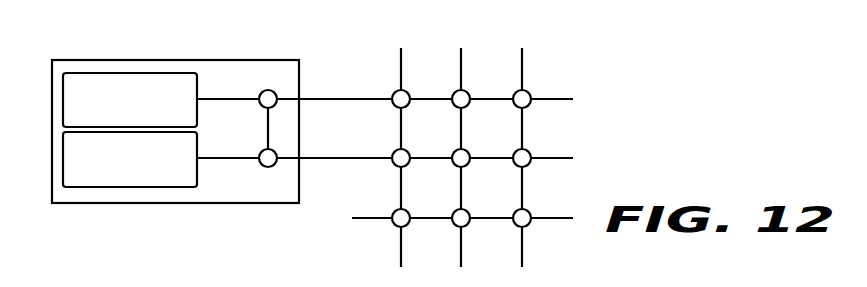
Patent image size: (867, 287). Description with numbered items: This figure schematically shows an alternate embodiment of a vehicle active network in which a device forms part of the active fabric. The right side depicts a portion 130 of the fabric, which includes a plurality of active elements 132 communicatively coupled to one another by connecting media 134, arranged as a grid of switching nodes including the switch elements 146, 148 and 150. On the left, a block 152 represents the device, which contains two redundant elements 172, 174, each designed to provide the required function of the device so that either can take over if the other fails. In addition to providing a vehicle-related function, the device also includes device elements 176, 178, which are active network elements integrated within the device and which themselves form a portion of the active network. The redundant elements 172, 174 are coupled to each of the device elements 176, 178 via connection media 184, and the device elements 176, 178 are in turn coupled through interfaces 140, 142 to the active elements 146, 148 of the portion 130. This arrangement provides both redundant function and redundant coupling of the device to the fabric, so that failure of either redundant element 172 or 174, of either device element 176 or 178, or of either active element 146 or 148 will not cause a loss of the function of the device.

The portion of a fabric 130 is at (616, 130).
The active element 132 is at (468, 106).
The connecting media 134 is at (524, 131).
The interface 140 is at (325, 96).
The interface 142 is at (325, 155).
The switch element 146 is at (394, 106).
The switch element 148 is at (394, 165).
The switch element 150 is at (394, 225).
The redundant block 152 is at (199, 60).
The redundant element 172 is at (130, 73).
The redundant element 174 is at (128, 187).
The device element 176 is at (259, 91).
The device element 178 is at (259, 166).
The connection media 184 is at (266, 128).